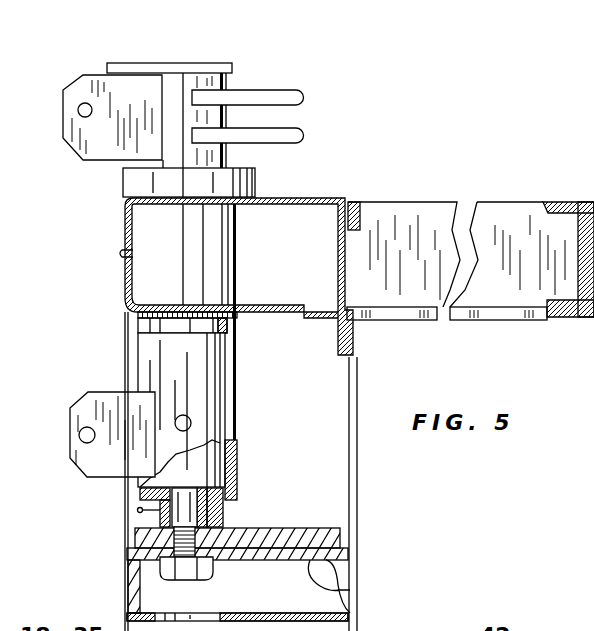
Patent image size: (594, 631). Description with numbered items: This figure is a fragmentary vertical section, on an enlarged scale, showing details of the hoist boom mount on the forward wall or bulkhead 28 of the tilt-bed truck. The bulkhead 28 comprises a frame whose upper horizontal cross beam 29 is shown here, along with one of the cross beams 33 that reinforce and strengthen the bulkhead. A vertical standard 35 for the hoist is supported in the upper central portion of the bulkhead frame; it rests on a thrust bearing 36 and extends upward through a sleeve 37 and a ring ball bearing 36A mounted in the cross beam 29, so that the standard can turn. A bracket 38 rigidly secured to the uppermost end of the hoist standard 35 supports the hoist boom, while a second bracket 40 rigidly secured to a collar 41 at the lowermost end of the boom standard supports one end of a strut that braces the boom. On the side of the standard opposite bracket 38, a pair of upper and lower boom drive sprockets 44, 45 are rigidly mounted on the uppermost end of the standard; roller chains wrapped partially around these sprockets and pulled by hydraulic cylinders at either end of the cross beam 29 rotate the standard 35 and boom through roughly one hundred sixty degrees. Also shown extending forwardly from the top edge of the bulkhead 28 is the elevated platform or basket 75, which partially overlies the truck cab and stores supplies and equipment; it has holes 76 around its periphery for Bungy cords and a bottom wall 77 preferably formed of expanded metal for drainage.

The forward wall or bulkhead 28 is at (372, 518).
The upper horizontal cross beam 29 is at (320, 200).
The cross beams 33 is at (350, 590).
The vertical standard 35 is at (227, 328).
The thrust bearing 36 is at (240, 515).
The ring ball bearing 36A is at (118, 188).
The sleeve 37 is at (238, 262).
The bracket 38 is at (100, 160).
The bracket 40 is at (103, 480).
The collar 41 is at (237, 417).
The upper boom drive sprocket 44 is at (296, 90).
The lower boom drive sprocket 45 is at (303, 138).
The elevated platform or basket 75 is at (427, 200).
The holes 76 is at (560, 205).
The bottom wall 77 is at (495, 307).